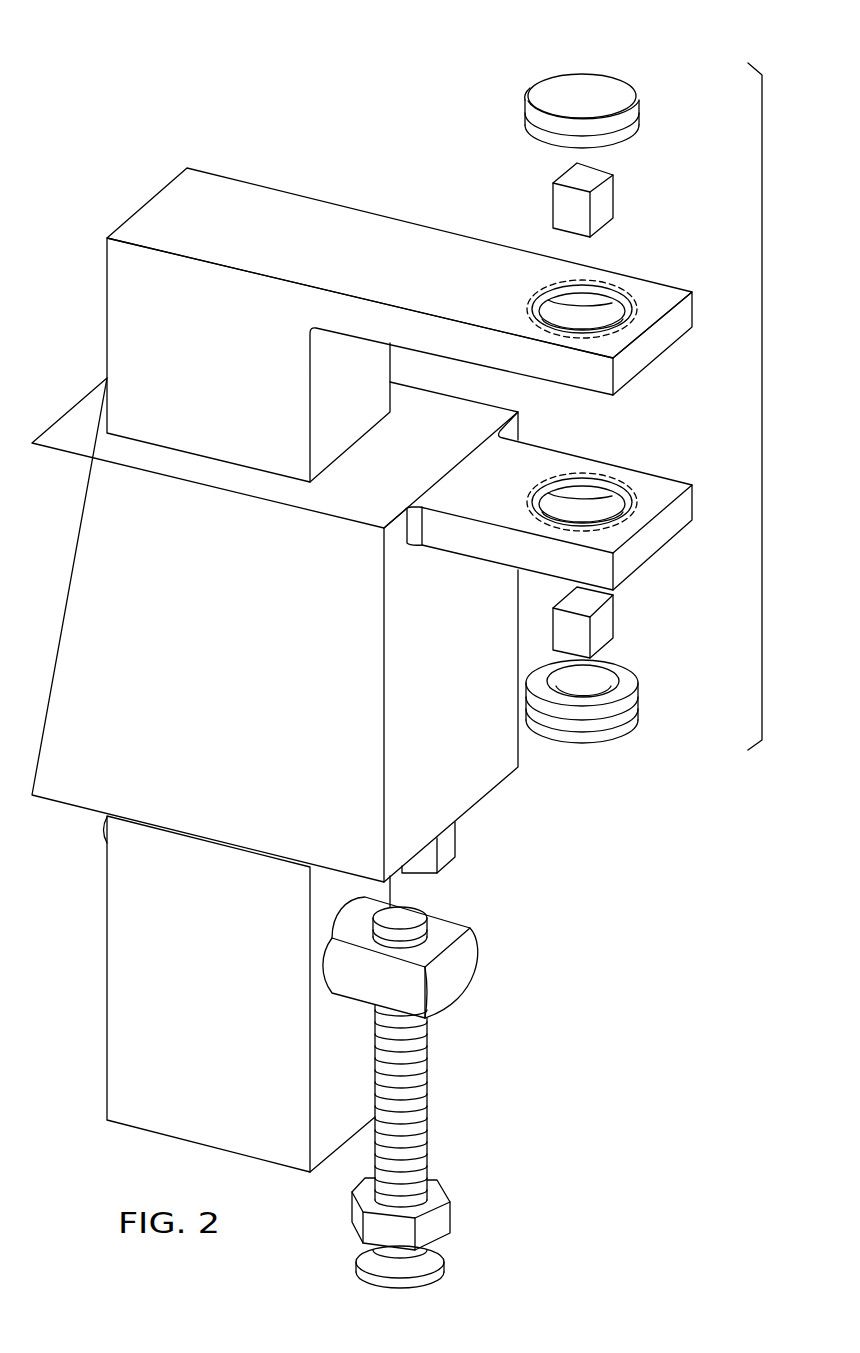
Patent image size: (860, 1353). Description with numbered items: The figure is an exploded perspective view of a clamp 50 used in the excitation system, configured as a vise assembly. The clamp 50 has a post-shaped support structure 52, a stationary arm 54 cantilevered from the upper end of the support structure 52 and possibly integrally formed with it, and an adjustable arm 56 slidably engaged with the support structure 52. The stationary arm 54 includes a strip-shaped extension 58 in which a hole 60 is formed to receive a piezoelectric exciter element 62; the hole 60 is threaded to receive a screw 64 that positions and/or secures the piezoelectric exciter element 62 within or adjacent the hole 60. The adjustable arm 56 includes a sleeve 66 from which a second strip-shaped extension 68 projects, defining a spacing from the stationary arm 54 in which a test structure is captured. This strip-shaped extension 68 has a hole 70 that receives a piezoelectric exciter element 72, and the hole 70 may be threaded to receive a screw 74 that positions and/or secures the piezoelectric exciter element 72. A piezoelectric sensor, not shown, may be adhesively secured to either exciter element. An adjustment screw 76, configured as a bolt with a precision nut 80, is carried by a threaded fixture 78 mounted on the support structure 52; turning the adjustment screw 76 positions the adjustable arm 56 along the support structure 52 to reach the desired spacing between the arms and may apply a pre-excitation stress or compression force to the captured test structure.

The clamp 50 is at (692, 46).
The support structure 52 is at (107, 968).
The stationary arm 54 is at (442, 229).
The adjustable arm 56 is at (599, 462).
The strip-shaped extension 58 is at (675, 284).
The hole 60 is at (622, 308).
The piezoelectric exciter element 62 is at (602, 205).
The screw 64 is at (616, 74).
The sleeve 66 is at (68, 411).
The strip-shaped extension 68 is at (675, 480).
The hole 70 is at (622, 502).
The piezoelectric exciter element 72 is at (603, 628).
The screw 74 is at (628, 728).
The adjustment screw 76 is at (432, 1108).
The threaded fixture 78 is at (455, 1001).
The precision nut 80 is at (450, 1215).